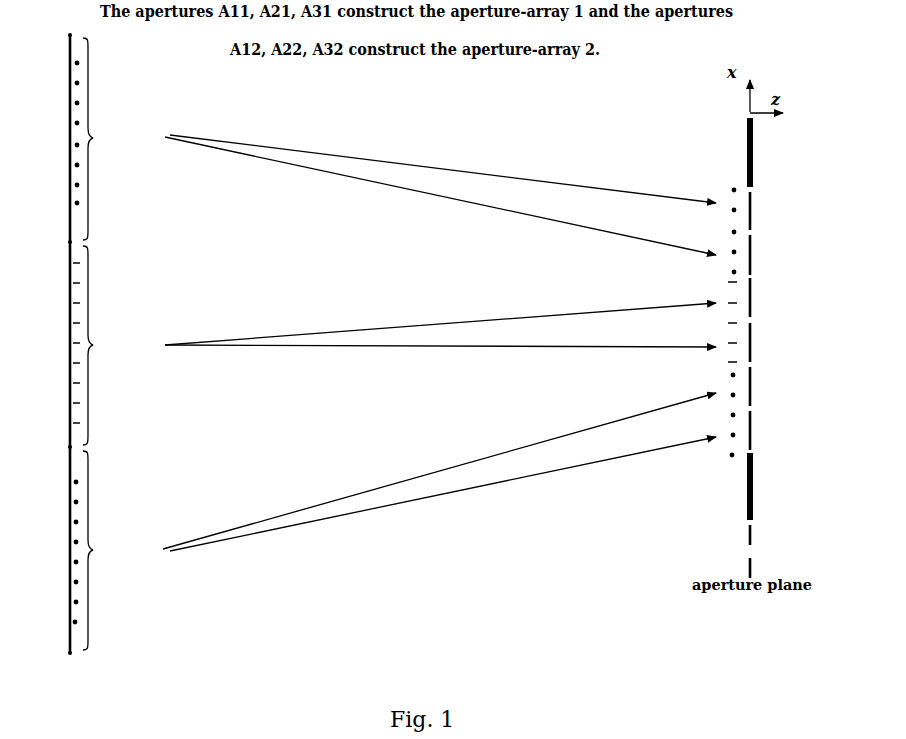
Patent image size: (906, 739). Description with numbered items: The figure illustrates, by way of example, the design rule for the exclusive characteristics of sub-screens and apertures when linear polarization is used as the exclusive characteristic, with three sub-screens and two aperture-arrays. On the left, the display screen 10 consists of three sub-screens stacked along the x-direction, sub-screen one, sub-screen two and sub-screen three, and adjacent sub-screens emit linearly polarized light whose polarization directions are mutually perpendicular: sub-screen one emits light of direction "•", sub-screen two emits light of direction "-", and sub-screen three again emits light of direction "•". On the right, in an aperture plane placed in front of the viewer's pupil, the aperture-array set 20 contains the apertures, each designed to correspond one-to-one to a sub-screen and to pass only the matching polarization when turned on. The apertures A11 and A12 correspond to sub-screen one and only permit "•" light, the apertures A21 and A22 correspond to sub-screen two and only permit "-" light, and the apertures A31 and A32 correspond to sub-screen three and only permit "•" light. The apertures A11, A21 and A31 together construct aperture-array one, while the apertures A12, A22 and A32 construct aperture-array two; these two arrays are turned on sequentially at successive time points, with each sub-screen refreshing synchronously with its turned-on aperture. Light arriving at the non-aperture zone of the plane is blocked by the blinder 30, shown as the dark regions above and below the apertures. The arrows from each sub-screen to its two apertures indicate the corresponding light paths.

The display screen 10 is at (65, 535).
The aperture-array set 20 is at (735, 287).
The blinder 30 is at (745, 498).
The aperture A11 is at (766, 210).
The aperture A12 is at (766, 254).
The aperture A21 is at (766, 297).
The aperture A22 is at (766, 340).
The aperture A31 is at (766, 383).
The aperture A32 is at (766, 426).